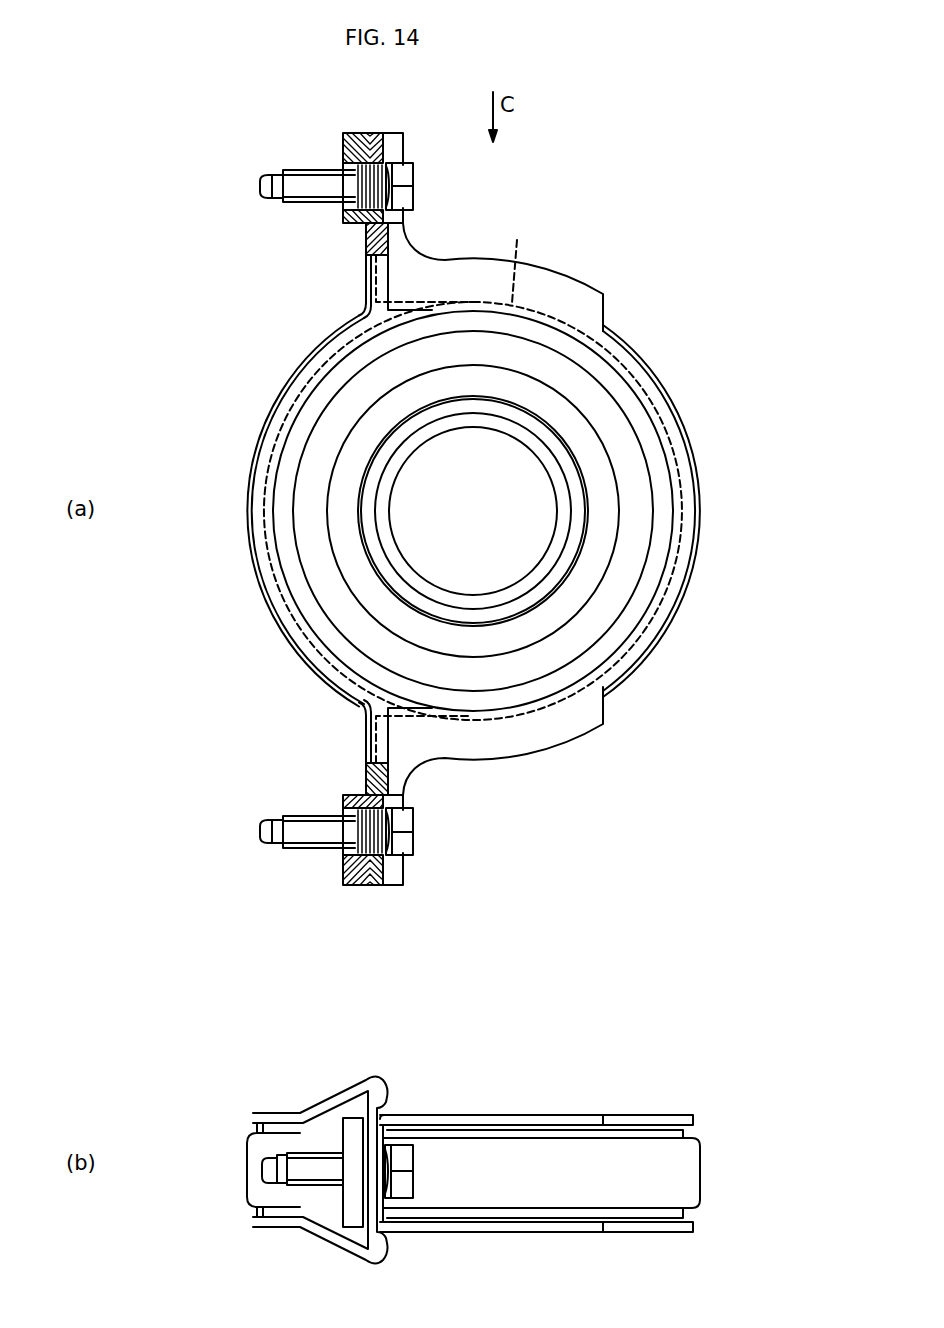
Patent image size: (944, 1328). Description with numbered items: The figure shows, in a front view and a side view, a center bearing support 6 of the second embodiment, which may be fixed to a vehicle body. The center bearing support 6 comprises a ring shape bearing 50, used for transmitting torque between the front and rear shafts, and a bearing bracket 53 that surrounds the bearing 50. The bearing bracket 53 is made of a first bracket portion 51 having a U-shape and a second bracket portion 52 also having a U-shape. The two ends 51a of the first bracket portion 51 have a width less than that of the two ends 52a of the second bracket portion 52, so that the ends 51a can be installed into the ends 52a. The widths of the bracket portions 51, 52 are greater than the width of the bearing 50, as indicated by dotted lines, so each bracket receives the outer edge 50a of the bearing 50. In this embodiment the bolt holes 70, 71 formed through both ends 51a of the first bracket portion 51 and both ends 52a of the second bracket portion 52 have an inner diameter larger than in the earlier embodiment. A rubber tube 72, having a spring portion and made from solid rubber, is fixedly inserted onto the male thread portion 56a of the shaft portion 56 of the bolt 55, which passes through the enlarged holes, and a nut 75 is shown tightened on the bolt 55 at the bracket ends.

The center bearing support 6 is at (571, 274).
The ring shape bearing 50 is at (330, 410).
The outer edge of the bearing 50a is at (533, 262).
The first bracket portion 51 is at (634, 368).
The ends of the first bracket portion 51a is at (396, 233).
The second bracket portion 52 is at (250, 470).
The ends of the second bracket portion 52a is at (368, 240).
The bearing bracket 53 is at (607, 336).
The bolt 55 is at (302, 171).
The shaft portion of the bolt 56 is at (262, 178).
The male thread portion 56a is at (298, 192).
The bolt hole 70 is at (395, 133).
The bolt hole 71 is at (344, 165).
The rubber tube 72 is at (367, 133).
The nut 75 is at (398, 186).